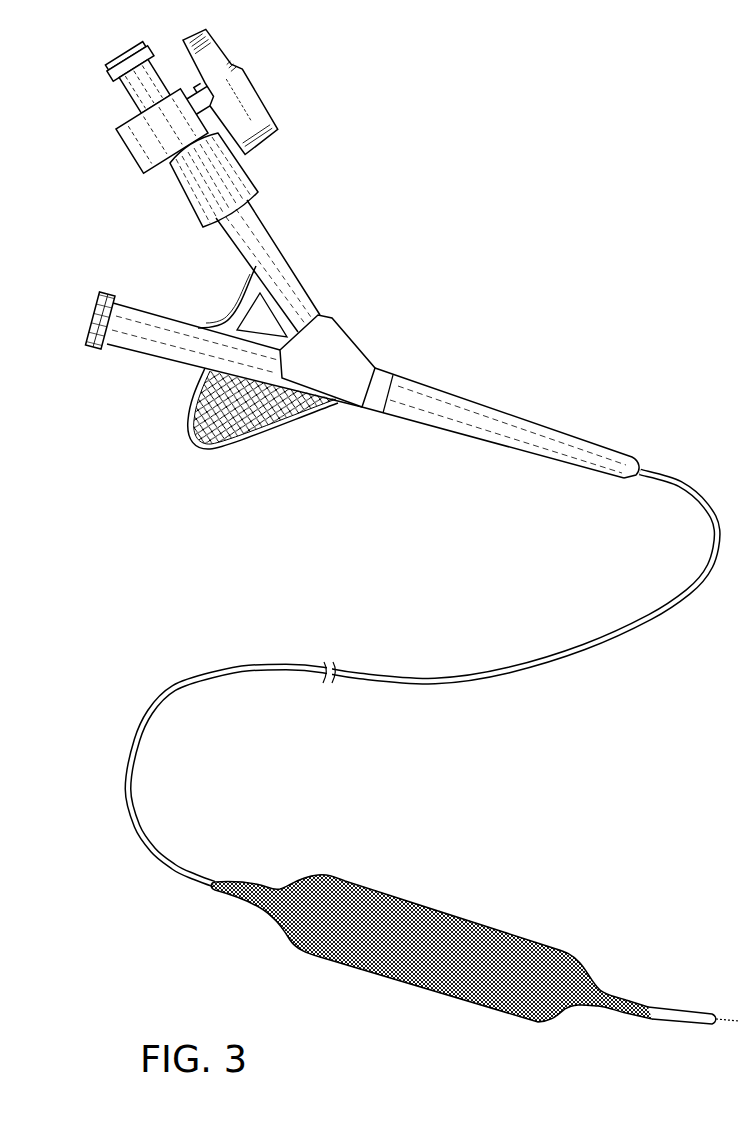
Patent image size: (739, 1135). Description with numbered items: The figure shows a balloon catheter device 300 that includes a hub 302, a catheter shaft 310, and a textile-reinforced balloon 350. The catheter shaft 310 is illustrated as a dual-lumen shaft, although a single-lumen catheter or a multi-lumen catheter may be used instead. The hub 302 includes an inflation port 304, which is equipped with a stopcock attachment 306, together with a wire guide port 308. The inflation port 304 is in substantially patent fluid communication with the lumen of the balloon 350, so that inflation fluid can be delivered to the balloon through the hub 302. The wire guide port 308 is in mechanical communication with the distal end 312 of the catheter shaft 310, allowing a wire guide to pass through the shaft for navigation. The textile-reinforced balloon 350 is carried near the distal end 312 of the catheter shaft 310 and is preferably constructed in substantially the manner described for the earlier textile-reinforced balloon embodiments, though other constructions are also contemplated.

The balloon catheter device 300 is at (555, 172).
The hub 302 is at (340, 354).
The inflation port 304 is at (273, 262).
The stopcock attachment 306 is at (127, 127).
The wire guide port 308 is at (100, 309).
The catheter shaft 310 is at (601, 647).
The distal end 312 is at (671, 1021).
The textile-reinforced balloon 350 is at (441, 907).